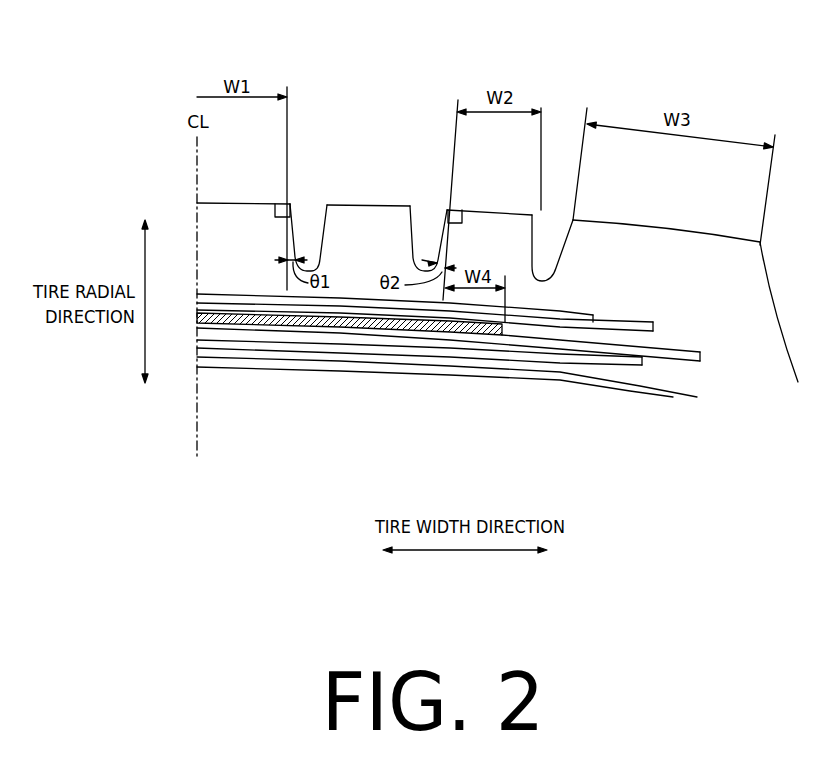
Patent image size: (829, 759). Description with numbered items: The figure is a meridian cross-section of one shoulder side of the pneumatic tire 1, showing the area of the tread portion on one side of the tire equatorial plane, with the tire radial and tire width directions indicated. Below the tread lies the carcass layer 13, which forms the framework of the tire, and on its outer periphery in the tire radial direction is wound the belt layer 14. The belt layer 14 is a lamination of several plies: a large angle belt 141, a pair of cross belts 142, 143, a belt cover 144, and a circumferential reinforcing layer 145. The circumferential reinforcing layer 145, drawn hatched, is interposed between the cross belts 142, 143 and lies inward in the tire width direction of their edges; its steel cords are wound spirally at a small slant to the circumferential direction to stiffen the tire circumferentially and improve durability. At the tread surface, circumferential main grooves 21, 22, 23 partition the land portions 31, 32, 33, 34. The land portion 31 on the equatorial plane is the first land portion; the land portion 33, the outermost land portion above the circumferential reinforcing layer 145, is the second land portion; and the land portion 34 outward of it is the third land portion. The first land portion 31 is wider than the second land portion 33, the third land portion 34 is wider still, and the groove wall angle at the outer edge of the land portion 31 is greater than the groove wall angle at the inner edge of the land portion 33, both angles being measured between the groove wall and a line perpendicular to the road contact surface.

The pneumatic tire 1 is at (706, 68).
The carcass layer 13 is at (596, 368).
The belt layer 14 is at (448, 387).
The large angle belt 141 is at (347, 445).
The cross belt 142 is at (510, 340).
The cross belt 143 is at (463, 320).
The belt cover 144 is at (420, 335).
The circumferential reinforcing layer 145 is at (382, 326).
The circumferential main groove 21 is at (308, 224).
The circumferential main groove 22 is at (422, 230).
The circumferential main groove 23 is at (548, 235).
The land portion 31 is at (239, 203).
The land portion 32 is at (364, 205).
The land portion 33 is at (493, 212).
The land portion 34 is at (672, 228).